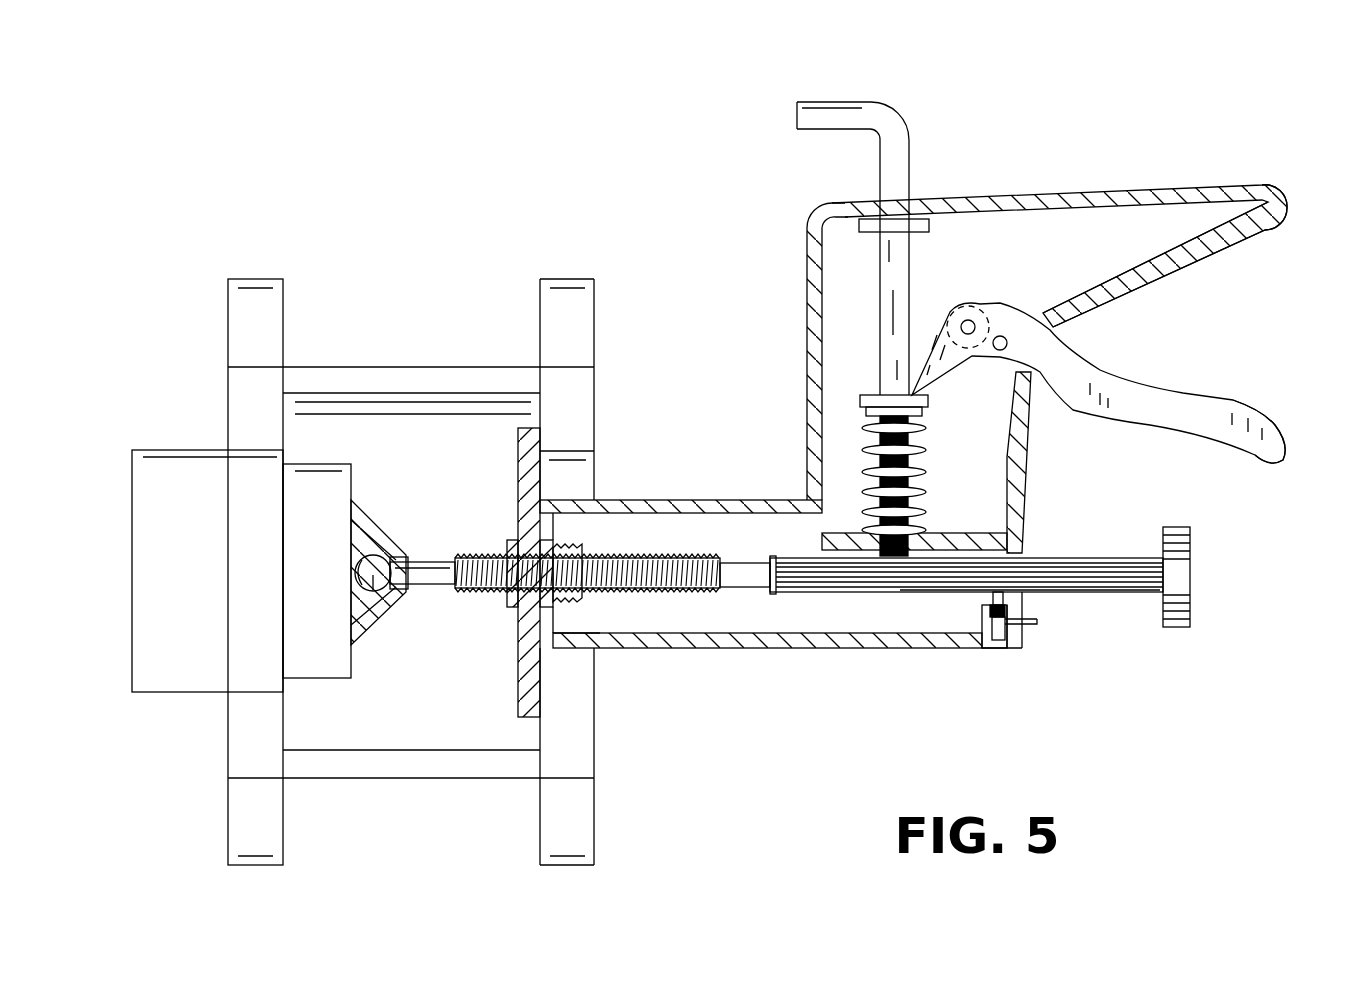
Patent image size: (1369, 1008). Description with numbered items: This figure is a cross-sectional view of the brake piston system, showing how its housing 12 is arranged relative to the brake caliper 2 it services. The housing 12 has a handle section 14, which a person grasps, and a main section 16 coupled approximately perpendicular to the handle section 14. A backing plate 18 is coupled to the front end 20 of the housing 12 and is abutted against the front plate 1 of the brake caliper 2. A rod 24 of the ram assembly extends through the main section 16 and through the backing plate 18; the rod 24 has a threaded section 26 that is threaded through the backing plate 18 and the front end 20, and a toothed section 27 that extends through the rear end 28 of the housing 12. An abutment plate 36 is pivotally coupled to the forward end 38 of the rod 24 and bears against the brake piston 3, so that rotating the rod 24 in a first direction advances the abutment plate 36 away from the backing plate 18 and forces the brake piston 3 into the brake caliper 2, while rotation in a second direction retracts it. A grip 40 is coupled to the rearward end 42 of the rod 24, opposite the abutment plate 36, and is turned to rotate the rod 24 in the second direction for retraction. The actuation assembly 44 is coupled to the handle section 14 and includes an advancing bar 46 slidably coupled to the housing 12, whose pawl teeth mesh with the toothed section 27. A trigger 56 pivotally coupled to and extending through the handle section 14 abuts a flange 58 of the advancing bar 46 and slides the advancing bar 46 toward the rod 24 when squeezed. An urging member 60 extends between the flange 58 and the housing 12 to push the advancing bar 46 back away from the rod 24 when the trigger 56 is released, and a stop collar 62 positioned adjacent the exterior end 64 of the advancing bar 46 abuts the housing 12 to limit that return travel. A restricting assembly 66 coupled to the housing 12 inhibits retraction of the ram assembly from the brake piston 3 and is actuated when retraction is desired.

The front plate 1 is at (594, 400).
The brake caliper 2 is at (228, 416).
The brake piston 3 is at (323, 678).
The housing 12 is at (1290, 205).
The handle section 14 is at (1143, 189).
The main section 16 is at (800, 648).
The backing plate 18 is at (518, 693).
The front end 20 is at (555, 613).
The rod 24 is at (746, 590).
The threaded section 26 is at (657, 548).
The toothed section 27 is at (1100, 592).
The rear end 28 is at (1022, 553).
The abutment plate 36 is at (383, 532).
The forward end 38 is at (386, 600).
The grip 40 is at (1192, 570).
The rearward end 42 is at (1141, 561).
The actuation assembly 44 is at (1277, 429).
The advancing bar 46 is at (912, 157).
The trigger 56 is at (1162, 398).
The flange 58 is at (860, 388).
The urging member 60 is at (862, 447).
The stop collar 62 is at (848, 233).
The exterior end 64 is at (845, 102).
The restricting assembly 66 is at (1037, 620).